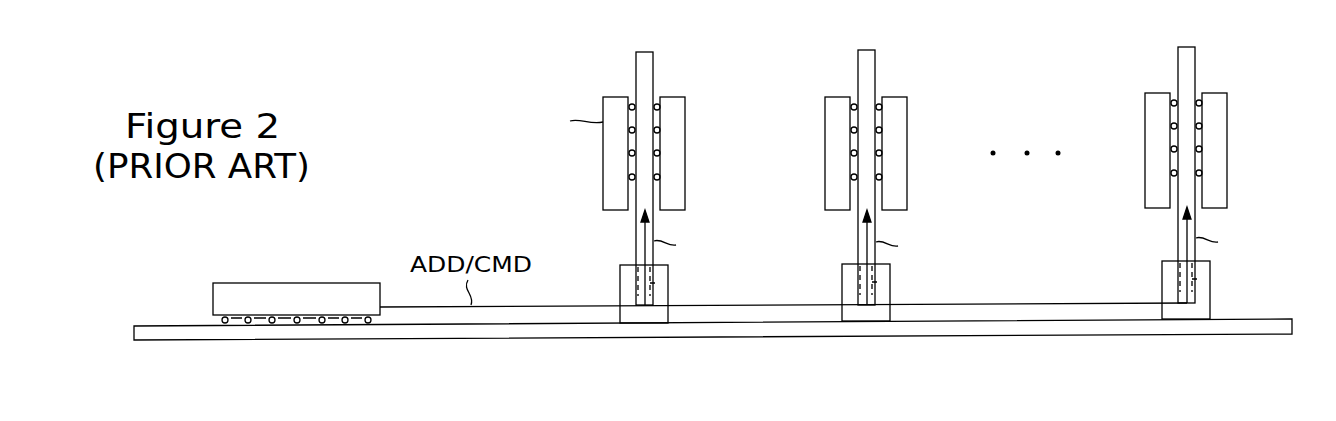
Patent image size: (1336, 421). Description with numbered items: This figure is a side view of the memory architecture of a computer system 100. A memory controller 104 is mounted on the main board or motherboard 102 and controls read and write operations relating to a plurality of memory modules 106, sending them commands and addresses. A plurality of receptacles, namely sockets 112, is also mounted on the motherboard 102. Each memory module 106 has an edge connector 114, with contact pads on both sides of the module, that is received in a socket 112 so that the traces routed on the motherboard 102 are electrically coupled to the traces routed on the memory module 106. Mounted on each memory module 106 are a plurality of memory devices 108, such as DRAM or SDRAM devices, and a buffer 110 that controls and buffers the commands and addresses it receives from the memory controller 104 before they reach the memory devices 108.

The computer system 100 is at (390, 110).
The motherboard 102 is at (293, 341).
The memory controller 104 is at (213, 300).
The memory module 106 is at (654, 62).
The memory device 108 is at (686, 186).
The buffer 110 is at (603, 189).
The socket 112 is at (620, 284).
The edge connector 114 is at (668, 282).